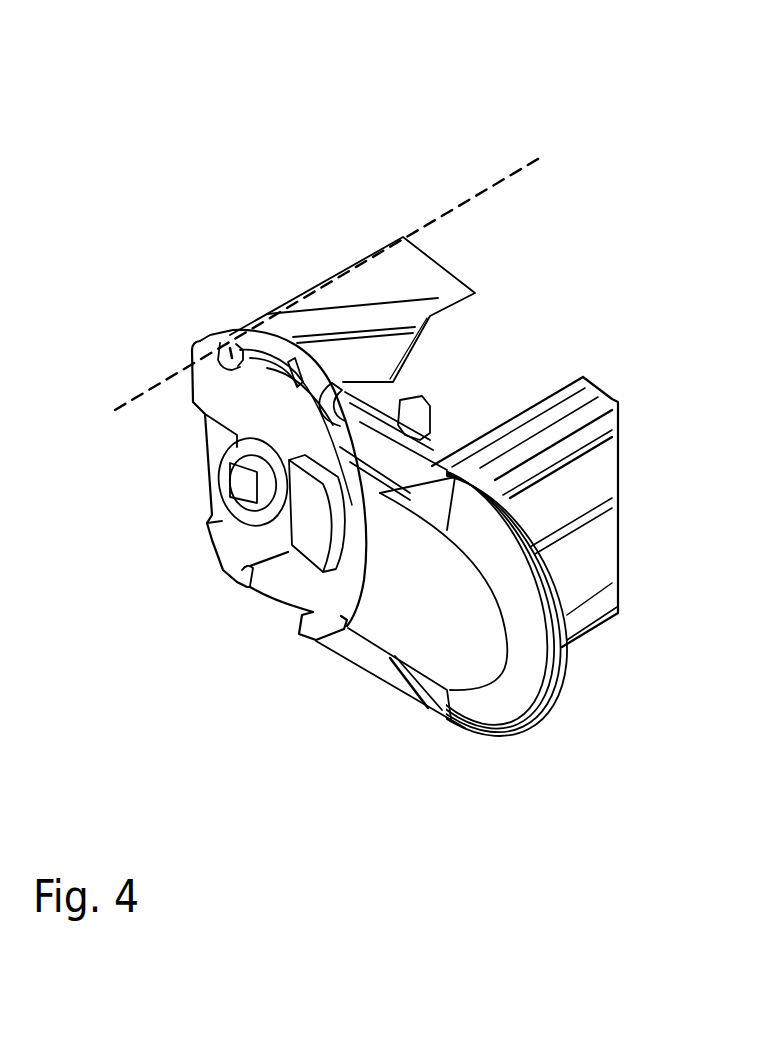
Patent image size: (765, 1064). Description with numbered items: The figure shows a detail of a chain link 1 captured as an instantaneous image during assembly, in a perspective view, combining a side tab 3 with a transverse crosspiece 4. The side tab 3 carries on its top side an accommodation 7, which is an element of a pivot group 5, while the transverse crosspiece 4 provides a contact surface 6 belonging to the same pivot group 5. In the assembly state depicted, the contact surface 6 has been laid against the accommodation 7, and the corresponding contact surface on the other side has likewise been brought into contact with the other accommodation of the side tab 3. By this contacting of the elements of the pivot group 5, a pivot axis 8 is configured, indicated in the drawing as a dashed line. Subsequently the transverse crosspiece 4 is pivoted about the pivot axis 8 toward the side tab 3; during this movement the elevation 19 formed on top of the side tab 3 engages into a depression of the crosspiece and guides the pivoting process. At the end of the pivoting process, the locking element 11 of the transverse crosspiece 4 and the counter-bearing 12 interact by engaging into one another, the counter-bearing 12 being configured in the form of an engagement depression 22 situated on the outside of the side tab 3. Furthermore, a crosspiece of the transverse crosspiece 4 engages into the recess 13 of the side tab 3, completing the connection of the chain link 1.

The chain link 1 is at (150, 128).
The side tab 3 is at (468, 605).
The transverse crosspiece 4 is at (405, 272).
The pivot group 5 is at (207, 285).
The contact surface 6 is at (233, 352).
The accommodation 7 is at (207, 340).
The pivot axis 8 is at (424, 225).
The locking element 11 is at (420, 363).
The recess 13 is at (386, 402).
The elevation 19 is at (258, 367).
The counter-bearing 12 is at (367, 477).
The engagement depression 22 is at (296, 677).